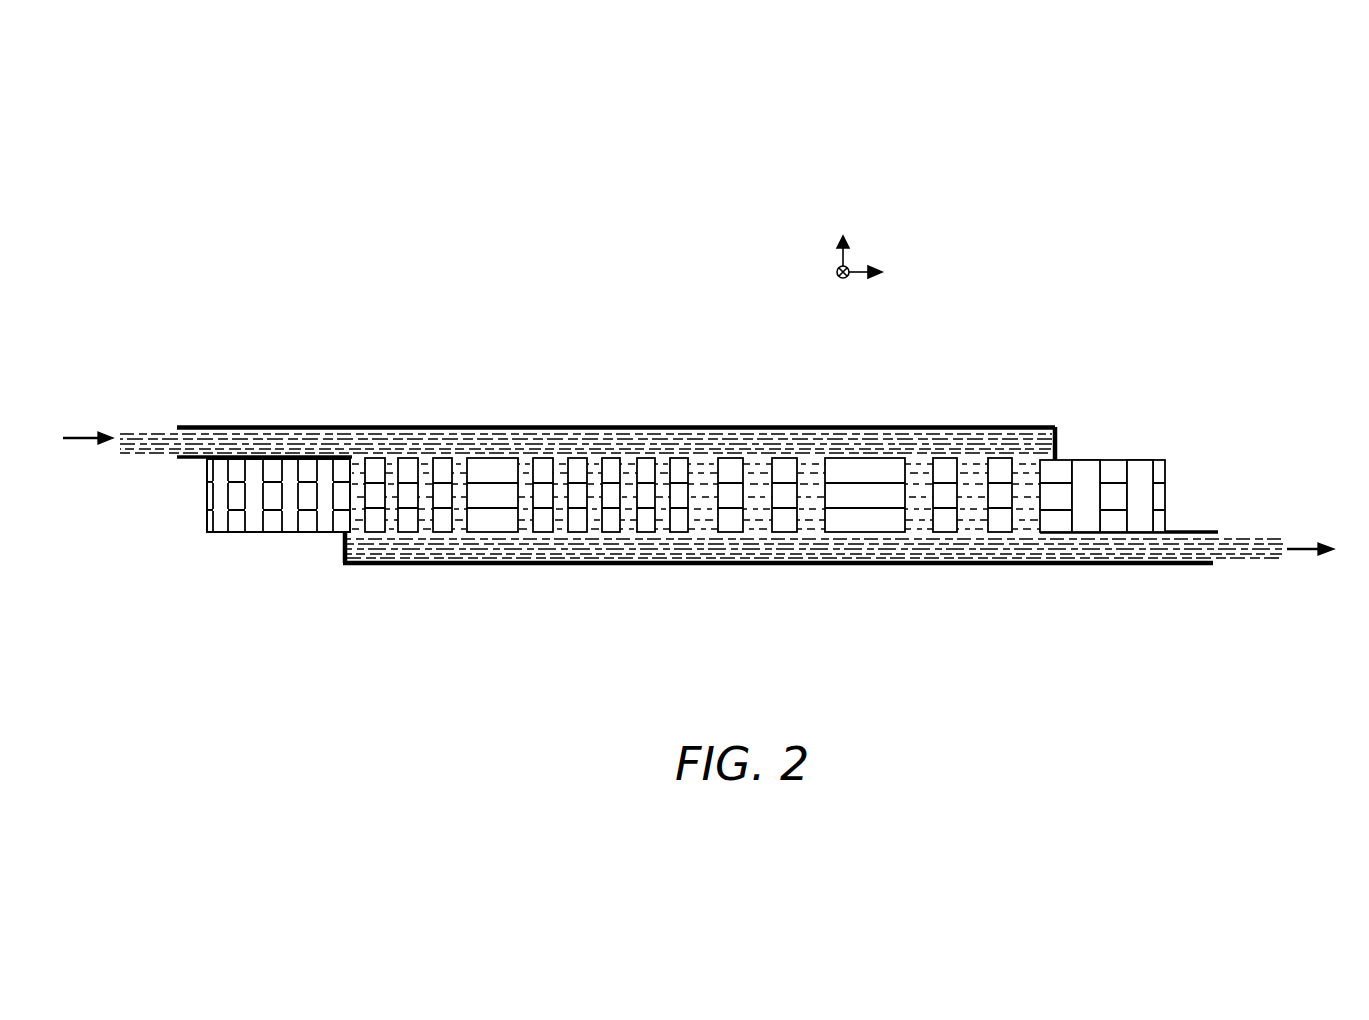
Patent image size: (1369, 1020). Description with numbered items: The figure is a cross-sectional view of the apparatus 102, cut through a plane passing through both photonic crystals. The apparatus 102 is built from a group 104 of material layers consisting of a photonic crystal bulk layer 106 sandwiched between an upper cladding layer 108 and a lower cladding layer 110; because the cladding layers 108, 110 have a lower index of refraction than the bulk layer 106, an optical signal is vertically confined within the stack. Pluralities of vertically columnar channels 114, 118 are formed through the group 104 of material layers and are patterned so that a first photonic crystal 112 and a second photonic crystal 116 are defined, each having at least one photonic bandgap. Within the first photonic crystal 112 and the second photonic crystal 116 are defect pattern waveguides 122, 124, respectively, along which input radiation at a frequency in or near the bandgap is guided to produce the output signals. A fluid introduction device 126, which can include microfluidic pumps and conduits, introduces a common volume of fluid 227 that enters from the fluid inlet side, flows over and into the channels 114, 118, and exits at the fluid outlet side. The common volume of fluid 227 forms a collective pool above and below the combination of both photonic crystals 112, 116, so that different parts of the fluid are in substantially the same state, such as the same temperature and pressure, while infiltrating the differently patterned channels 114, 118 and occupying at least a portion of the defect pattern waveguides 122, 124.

The apparatus 102 is at (613, 173).
The group of material layers 104 is at (1132, 468).
The photonic crystal bulk layer 106 is at (205, 498).
The upper cladding layer 108 is at (205, 473).
The lower cladding layer 110 is at (205, 520).
The first photonic crystal 112 is at (438, 488).
The vertically columnar channels 114 is at (255, 533).
The second photonic crystal 116 is at (848, 488).
The vertically columnar channels 118 is at (1142, 472).
The defect pattern waveguide 122 is at (490, 497).
The defect pattern waveguide 124 is at (863, 497).
The fluid introduction device 126 is at (200, 425).
The common volume of fluid 227 is at (703, 543).